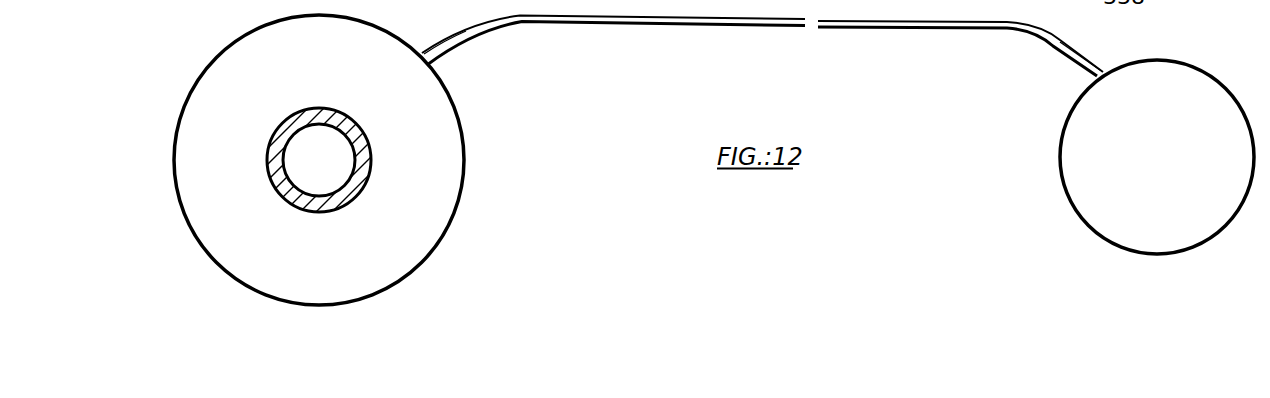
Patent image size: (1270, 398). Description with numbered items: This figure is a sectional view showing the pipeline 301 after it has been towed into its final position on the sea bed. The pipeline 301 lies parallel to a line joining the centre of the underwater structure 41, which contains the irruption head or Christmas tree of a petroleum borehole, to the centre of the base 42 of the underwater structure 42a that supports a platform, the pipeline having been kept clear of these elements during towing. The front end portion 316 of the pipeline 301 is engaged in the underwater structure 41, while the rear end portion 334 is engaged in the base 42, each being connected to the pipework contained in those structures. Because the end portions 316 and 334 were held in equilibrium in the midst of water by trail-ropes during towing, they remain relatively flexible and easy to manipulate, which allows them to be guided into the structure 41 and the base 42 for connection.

The base 42 is at (437, 207).
The underwater structure 42a is at (365, 170).
The pipeline 301 is at (629, 29).
The rear end portion 334 is at (460, 35).
The front end portion 316 is at (1073, 55).
The underwater structure 41 is at (1085, 173).